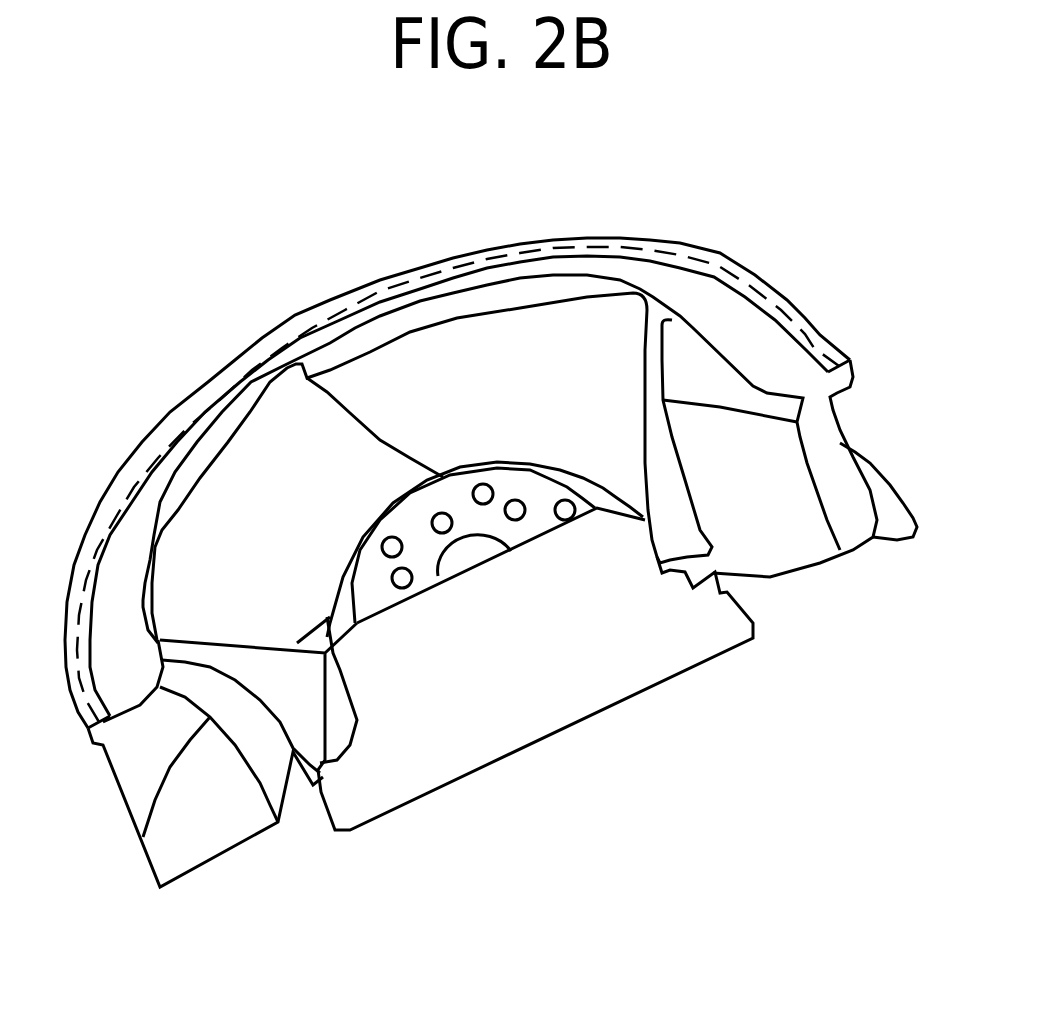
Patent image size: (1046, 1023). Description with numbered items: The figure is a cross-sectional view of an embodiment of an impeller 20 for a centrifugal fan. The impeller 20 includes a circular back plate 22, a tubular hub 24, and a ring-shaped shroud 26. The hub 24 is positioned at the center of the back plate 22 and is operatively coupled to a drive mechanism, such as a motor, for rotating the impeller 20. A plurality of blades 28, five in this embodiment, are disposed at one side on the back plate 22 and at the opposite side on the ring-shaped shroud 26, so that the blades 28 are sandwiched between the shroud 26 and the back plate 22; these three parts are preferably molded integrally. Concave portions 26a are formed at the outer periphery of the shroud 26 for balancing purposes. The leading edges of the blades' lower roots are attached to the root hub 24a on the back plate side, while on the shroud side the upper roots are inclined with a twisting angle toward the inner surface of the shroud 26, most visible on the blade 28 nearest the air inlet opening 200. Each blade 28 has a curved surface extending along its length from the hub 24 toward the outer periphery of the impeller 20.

The impeller 20 is at (750, 178).
The circular back plate 22 is at (900, 555).
The tubular hub 24 is at (513, 550).
The root hub 24a is at (655, 568).
The ring-shaped shroud 26 is at (635, 268).
The concave portions 26a is at (90, 538).
The blades 28 is at (306, 415).
The air inlet opening 200 is at (690, 385).